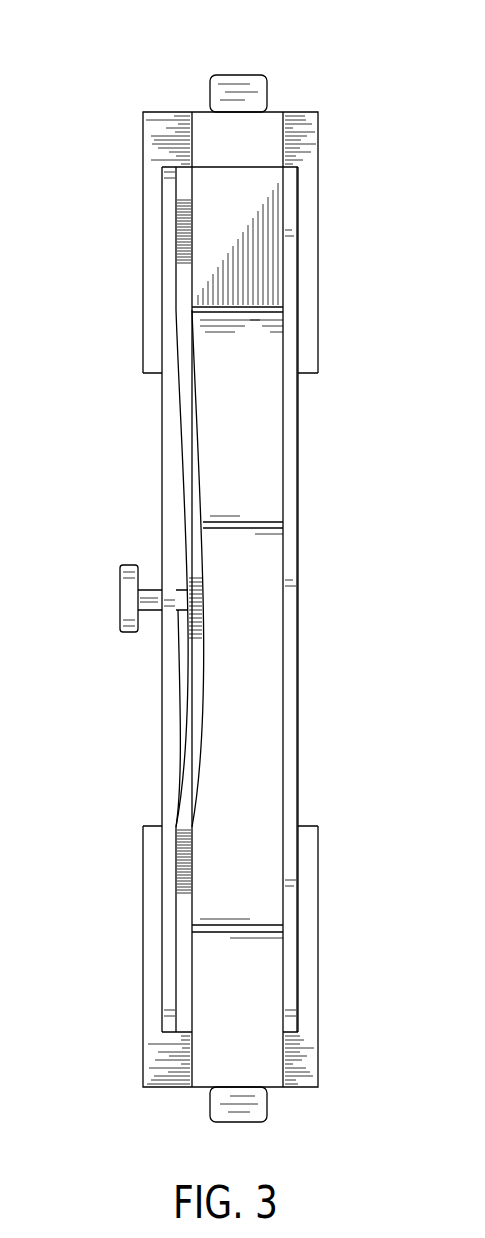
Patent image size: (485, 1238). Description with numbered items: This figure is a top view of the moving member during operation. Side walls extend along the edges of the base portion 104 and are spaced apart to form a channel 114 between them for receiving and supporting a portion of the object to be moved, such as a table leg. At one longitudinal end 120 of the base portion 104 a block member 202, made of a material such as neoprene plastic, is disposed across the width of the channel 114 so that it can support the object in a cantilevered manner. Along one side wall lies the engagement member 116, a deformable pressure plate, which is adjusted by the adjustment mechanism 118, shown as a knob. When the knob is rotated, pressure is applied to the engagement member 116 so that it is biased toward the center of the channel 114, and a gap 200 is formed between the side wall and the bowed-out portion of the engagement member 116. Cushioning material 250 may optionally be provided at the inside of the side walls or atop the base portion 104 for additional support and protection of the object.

The base portion 104 is at (213, 140).
The longitudinal end 120 is at (283, 97).
The block member 202 is at (252, 223).
The cushioning material 250 is at (240, 418).
The engagement member 116 is at (185, 508).
The adjustment mechanism 118 is at (120, 600).
The gap 200 is at (182, 656).
The channel 114 is at (257, 718).